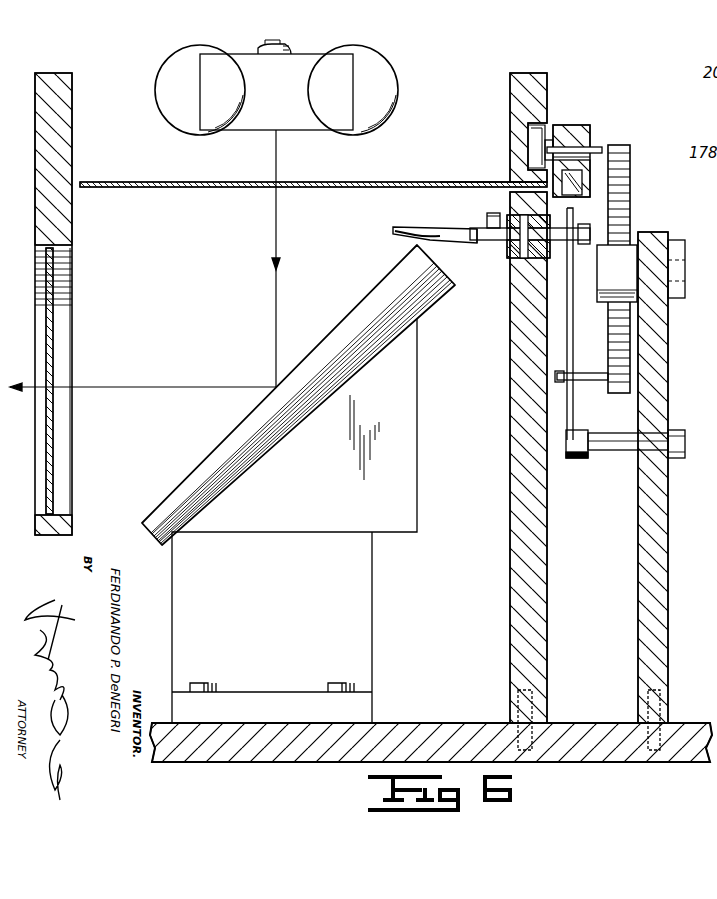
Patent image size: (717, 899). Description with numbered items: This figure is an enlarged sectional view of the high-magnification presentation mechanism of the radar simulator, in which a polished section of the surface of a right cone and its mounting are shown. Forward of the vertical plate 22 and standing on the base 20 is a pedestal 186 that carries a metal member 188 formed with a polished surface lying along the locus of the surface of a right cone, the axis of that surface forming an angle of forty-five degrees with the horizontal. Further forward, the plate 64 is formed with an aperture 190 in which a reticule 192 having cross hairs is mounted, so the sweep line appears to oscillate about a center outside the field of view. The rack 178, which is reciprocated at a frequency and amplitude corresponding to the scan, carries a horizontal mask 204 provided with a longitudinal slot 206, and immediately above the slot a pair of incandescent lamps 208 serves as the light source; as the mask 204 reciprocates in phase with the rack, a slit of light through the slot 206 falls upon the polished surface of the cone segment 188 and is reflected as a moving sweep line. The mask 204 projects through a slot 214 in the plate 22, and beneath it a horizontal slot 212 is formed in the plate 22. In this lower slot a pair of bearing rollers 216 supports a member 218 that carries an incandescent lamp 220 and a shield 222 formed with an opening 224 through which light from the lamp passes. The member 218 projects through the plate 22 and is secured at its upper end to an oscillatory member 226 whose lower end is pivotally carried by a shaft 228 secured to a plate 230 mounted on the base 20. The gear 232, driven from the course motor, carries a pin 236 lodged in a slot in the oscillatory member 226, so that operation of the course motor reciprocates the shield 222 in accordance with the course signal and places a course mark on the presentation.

The base 20 is at (441, 730).
The plate 22 is at (548, 642).
The plate 64 is at (72, 230).
The rack 178 is at (572, 125).
The pedestal 186 is at (373, 618).
The metal member 188 is at (432, 310).
The aperture 190 is at (70, 308).
The reticule 192 is at (55, 358).
The horizontal mask 204 is at (425, 182).
The longitudinal slot 206 is at (383, 182).
The incandescent lamps 208 is at (160, 80).
The horizontal slot 212 is at (523, 258).
The slot 214 is at (516, 178).
The bearing rollers 216 is at (507, 254).
The member 218 is at (482, 232).
The incandescent lamp 220 is at (487, 220).
The shield 222 is at (435, 226).
The opening 224 is at (410, 235).
The oscillatory member 226 is at (574, 283).
The shaft 228 is at (610, 455).
The plate 230 is at (668, 516).
The gear 232 is at (630, 196).
The pin 236 is at (585, 372).